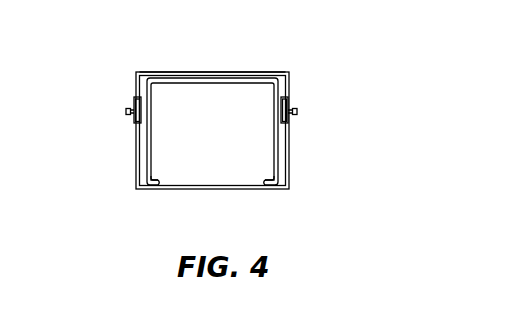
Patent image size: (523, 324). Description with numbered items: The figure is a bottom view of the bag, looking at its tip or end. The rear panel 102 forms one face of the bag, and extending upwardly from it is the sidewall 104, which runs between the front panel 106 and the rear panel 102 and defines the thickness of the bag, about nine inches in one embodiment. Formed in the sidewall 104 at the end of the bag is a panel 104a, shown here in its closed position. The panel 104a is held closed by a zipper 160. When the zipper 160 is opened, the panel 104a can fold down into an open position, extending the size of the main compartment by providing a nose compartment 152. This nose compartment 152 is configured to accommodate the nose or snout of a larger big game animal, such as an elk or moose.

The rear panel 102 is at (222, 189).
The sidewall 104 is at (136, 140).
The panel 104a is at (188, 172).
The front panel 106 is at (235, 71).
The nose compartment 152 is at (218, 132).
The zipper 160 is at (282, 162).